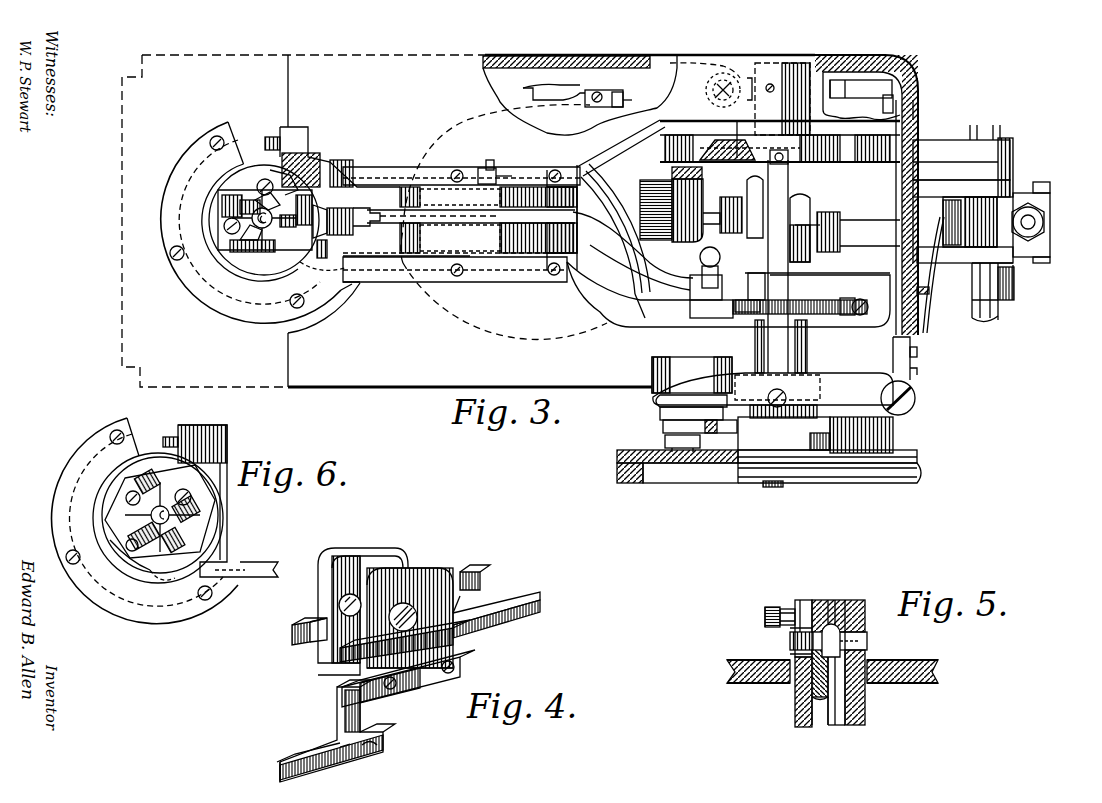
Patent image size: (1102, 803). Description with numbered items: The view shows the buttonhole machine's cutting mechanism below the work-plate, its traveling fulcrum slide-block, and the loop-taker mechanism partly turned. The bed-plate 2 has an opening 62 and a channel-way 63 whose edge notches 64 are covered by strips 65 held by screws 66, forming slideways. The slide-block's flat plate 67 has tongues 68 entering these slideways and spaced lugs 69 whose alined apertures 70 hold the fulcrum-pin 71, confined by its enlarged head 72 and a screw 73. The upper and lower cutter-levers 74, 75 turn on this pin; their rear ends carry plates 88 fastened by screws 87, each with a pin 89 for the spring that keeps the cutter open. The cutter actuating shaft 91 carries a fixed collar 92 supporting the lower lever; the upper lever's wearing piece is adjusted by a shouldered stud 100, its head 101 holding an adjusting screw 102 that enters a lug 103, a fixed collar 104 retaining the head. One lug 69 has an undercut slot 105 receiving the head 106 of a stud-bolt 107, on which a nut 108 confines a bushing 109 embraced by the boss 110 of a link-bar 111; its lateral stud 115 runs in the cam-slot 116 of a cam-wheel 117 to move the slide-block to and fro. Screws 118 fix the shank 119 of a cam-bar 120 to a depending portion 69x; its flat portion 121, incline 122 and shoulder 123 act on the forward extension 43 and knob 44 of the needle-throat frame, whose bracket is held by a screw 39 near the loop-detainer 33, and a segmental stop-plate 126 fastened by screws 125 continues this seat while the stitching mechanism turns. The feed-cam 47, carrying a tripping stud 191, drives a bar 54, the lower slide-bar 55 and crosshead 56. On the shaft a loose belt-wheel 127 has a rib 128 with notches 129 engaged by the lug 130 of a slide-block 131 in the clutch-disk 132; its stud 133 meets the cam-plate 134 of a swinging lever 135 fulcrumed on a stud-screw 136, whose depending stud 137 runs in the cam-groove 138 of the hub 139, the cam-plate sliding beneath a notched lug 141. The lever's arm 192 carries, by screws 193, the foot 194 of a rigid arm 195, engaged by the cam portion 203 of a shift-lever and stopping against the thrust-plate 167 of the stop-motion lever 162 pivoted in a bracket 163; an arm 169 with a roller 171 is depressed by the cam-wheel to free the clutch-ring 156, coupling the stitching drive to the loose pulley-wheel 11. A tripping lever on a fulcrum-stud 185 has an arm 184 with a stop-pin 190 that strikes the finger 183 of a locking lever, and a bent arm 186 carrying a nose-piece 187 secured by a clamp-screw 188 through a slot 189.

In FIG. 3, the bed-plate 2 is at (468, 221).
In FIG. 5, the bed-plate 2 is at (914, 664).
In FIG. 3, the loose pulley-wheel 11 is at (1000, 312).
In FIG. 3, the loop-detainer 33 is at (232, 226).
In FIG. 3, the screw 39 is at (257, 184).
In FIG. 6, the forward extension 43 is at (147, 565).
In FIG. 6, the knob 44 is at (168, 582).
In FIG. 3, the feed-cam 47 is at (615, 229).
In FIG. 3, the bar 54 is at (668, 240).
In FIG. 3, the lower slide-bar 55 is at (676, 175).
In FIG. 3, the crosshead 56 is at (704, 182).
In FIG. 3, the opening 62 is at (645, 320).
In FIG. 3, the channel-way 63 is at (332, 192).
In FIG. 5, the channel-way 63 is at (790, 683).
In FIG. 3, the parallel notches 64 is at (390, 172).
In FIG. 5, the parallel notches 64 is at (885, 683).
In FIG. 3, the strips 65 is at (455, 213).
In FIG. 5, the strips 65 is at (770, 660).
In FIG. 3, the screws 66 is at (506, 221).
In FIG. 3, the flat plate 67 is at (573, 217).
In FIG. 4, the flat plate 67 is at (305, 643).
In FIG. 4, the laterally extending tongues 68 is at (292, 630).
In FIG. 3, the spaced lugs 69 is at (486, 220).
In FIG. 4, the spaced lugs 69 is at (405, 549).
In FIG. 4, the depending portion 69x is at (455, 643).
In FIG. 4, the alined transverse apertures 70 is at (340, 602).
In FIG. 5, the fulcrum-pin 71 is at (855, 638).
In FIG. 3, the enlarged head 72 is at (452, 268).
In FIG. 5, the enlarged head 72 is at (867, 641).
In FIG. 5, the screw 73 is at (790, 641).
In FIG. 5, the upper cutter-lever 74 is at (818, 705).
In FIG. 5, the lower cutter-lever 75 is at (835, 725).
In FIG. 3, the fastening screws 87 is at (705, 318).
In FIG. 3, the plates 88 is at (690, 290).
In FIG. 3, the pin 89 is at (716, 252).
In FIG. 3, the cutter actuating shaft 91 is at (792, 192).
In FIG. 3, the fixed collar 92 is at (748, 316).
In FIG. 3, the shouldered stud 100 is at (845, 268).
In FIG. 3, the head 101 is at (858, 316).
In FIG. 3, the adjusting screw 102 is at (740, 313).
In FIG. 3, the lug 103 is at (755, 285).
In FIG. 3, the fixed collar 104 is at (831, 312).
In FIG. 3, the undercut slot 105 is at (471, 213).
In FIG. 5, the undercut slot 105 is at (800, 608).
In FIG. 3, the head 106 is at (441, 211).
In FIG. 5, the head 106 is at (812, 612).
In FIG. 3, the stud-bolt 107 is at (490, 160).
In FIG. 5, the stud-bolt 107 is at (765, 618).
In FIG. 3, the nut 108 is at (497, 170).
In FIG. 5, the bushing 109 is at (768, 609).
In FIG. 3, the boss 110 is at (526, 164).
In FIG. 5, the boss 110 is at (787, 609).
In FIG. 3, the link-bar 111 is at (621, 148).
In FIG. 3, the lateral stud 115 is at (769, 110).
In FIG. 3, the cam-slot 116 is at (770, 146).
In FIG. 3, the cam-wheel 117 is at (668, 133).
In FIG. 4, the screws 118 is at (392, 690).
In FIG. 4, the shank 119 is at (425, 680).
In FIG. 3, the cam-bar 120 is at (385, 269).
In FIG. 6, the cam-bar 120 is at (220, 501).
In FIG. 4, the cam-bar 120 is at (323, 752).
In FIG. 4, the flat portion 121 is at (322, 770).
In FIG. 4, the upwardly inclined operative portion 122 is at (350, 755).
In FIG. 4, the shoulder 123 is at (368, 748).
In FIG. 3, the fastening screws 125 is at (172, 259).
In FIG. 6, the fastening screws 125 is at (68, 562).
In FIG. 3, the segmental stop-plate 126 is at (249, 226).
In FIG. 6, the segmental stop-plate 126 is at (146, 525).
In FIG. 3, the grooved loose belt-wheel 127 is at (920, 476).
In FIG. 3, the annular rib 128 is at (827, 440).
In FIG. 3, the notches 129 is at (665, 443).
In FIG. 3, the lug 130 is at (677, 466).
In FIG. 3, the slide-block 131 is at (663, 429).
In FIG. 3, the clutch-disk 132 is at (893, 433).
In FIG. 3, the stud 133 is at (680, 413).
In FIG. 3, the clutch-controlling cam-plate 134 is at (655, 401).
In FIG. 3, the clutch-controlling lever 135 is at (773, 389).
In FIG. 3, the stud-screw 136 is at (913, 398).
In FIG. 3, the depending stud 137 is at (789, 392).
In FIG. 3, the cam-groove 138 is at (770, 421).
In FIG. 3, the hub 139 is at (817, 413).
In FIG. 3, the notched lug 141 is at (729, 356).
In FIG. 3, the clutch-ring 156 is at (1015, 286).
In FIG. 3, the stop-motion lever 162 is at (1050, 212).
In FIG. 3, the bracket 163 is at (963, 231).
In FIG. 3, the thrust-plate 167 is at (972, 222).
In FIG. 3, the arm 169 is at (932, 148).
In FIG. 3, the anti-friction roller 171 is at (915, 127).
In FIG. 3, the finger 183 is at (895, 104).
In FIG. 3, the arm 184 is at (870, 85).
In FIG. 3, the fulcrum-stud 185 is at (710, 100).
In FIG. 3, the bent arm 186 is at (940, 222).
In FIG. 3, the nose-piece 187 is at (560, 84).
In FIG. 3, the clamp-screw 188 is at (612, 91).
In FIG. 3, the longitudinal slot 189 is at (634, 101).
In FIG. 3, the lateral stop-pin 190 is at (838, 50).
In FIG. 3, the tripping stud 191 is at (615, 232).
In FIG. 3, the inwardly extending arm 192 is at (892, 360).
In FIG. 3, the screws 193 is at (918, 358).
In FIG. 3, the foot 194 is at (918, 378).
In FIG. 3, the rigid arm 195 is at (931, 280).
In FIG. 3, the convex cam portion 203 is at (929, 295).